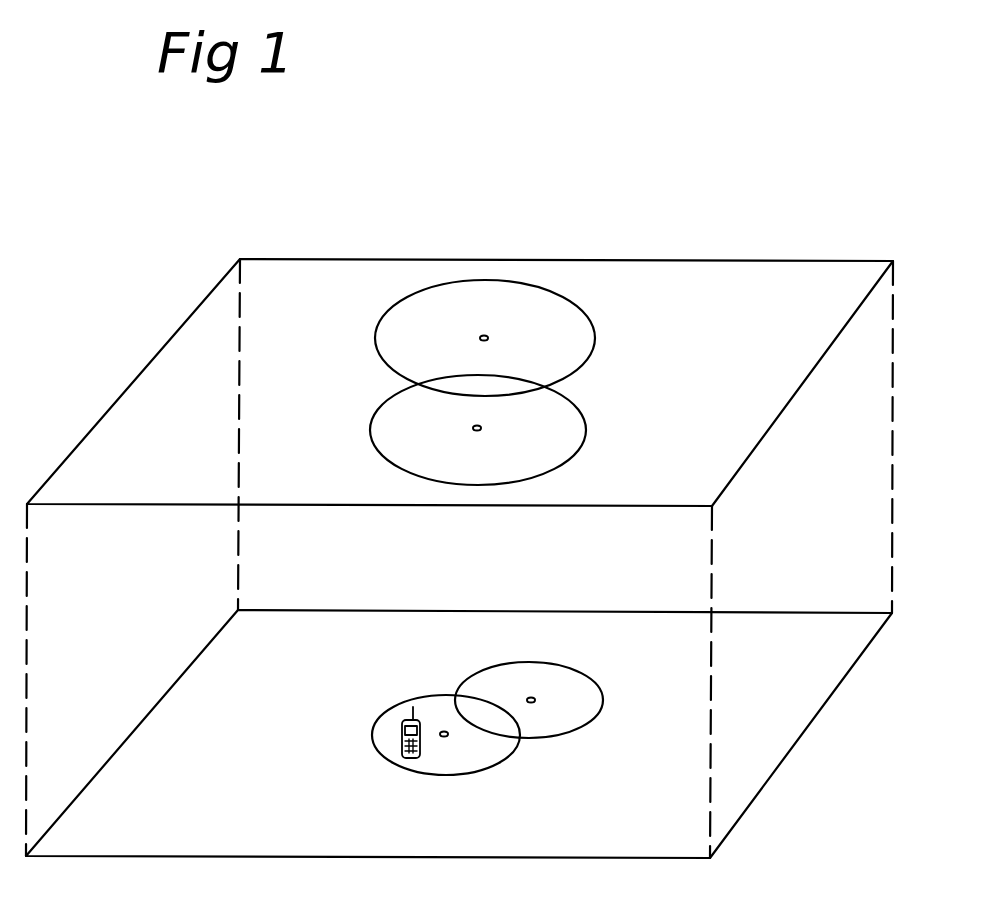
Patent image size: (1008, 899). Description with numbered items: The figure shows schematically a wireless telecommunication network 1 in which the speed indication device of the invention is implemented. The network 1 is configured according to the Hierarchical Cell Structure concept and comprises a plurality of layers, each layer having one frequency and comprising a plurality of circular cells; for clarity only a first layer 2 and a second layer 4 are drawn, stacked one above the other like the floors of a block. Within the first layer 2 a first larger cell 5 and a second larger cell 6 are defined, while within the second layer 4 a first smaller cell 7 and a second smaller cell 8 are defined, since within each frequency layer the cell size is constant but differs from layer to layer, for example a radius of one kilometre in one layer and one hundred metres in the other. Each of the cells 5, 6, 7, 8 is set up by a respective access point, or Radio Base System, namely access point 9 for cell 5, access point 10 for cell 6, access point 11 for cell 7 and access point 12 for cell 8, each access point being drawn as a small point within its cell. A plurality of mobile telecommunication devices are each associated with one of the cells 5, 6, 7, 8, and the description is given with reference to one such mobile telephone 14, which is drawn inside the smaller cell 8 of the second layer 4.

The wireless telecommunication network 1 is at (690, 226).
The first layer 2 is at (822, 276).
The second layer 4 is at (752, 755).
The first larger cell 5 is at (526, 438).
The second larger cell 6 is at (581, 346).
The first smaller cell 7 is at (563, 688).
The second smaller cell 8 is at (482, 757).
The access point 9 is at (474, 431).
The access point 10 is at (488, 337).
The access point 11 is at (530, 698).
The access point 12 is at (447, 738).
The mobile telephone 14 is at (402, 739).